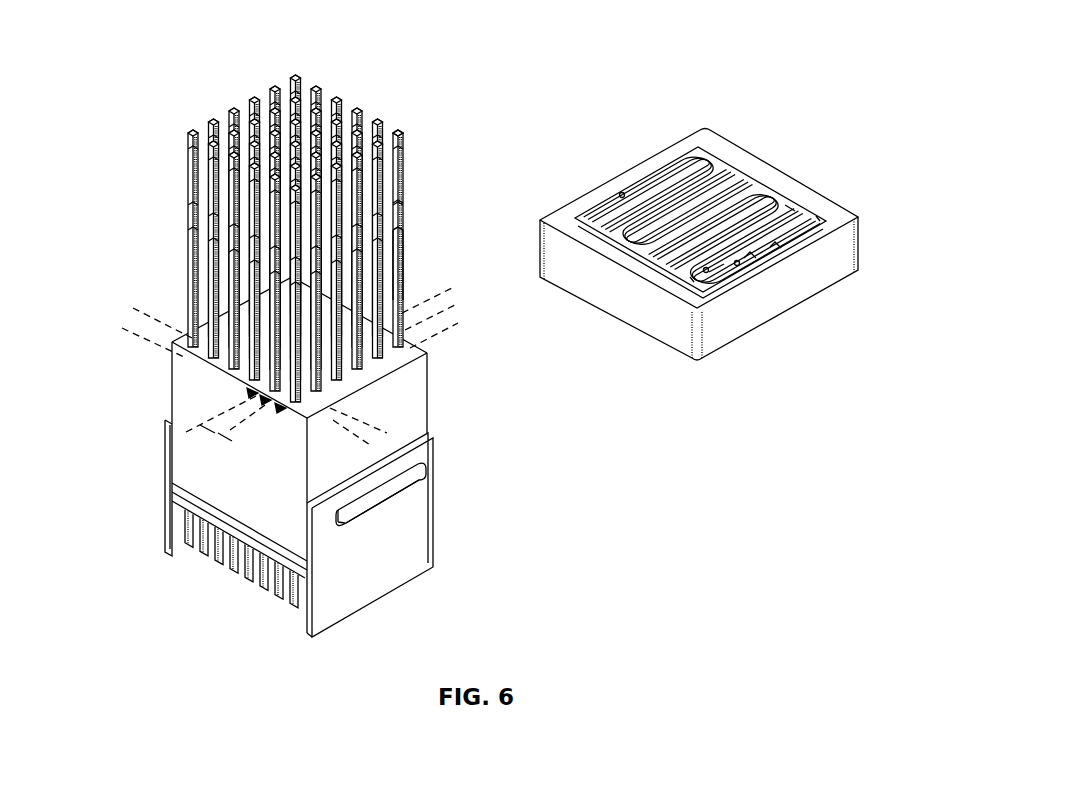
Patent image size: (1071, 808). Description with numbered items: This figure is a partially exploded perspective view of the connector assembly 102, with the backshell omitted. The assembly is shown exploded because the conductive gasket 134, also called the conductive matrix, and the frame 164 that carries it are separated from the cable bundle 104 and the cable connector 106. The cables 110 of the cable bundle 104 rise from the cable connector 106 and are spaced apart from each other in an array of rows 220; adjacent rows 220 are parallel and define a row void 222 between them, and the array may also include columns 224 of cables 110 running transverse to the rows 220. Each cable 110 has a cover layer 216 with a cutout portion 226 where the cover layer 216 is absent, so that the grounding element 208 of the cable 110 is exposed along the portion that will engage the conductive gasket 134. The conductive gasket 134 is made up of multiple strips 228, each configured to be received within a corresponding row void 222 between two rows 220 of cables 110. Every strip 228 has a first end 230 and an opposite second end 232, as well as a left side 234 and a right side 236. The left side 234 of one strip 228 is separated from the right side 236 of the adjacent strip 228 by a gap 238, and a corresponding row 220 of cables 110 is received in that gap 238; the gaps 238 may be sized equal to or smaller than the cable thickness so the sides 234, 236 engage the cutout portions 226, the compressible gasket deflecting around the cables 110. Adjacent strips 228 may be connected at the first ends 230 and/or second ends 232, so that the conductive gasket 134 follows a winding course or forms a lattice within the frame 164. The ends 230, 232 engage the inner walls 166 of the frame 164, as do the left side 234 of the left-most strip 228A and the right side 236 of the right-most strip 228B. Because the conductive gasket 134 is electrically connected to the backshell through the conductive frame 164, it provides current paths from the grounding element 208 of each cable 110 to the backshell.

The connector assembly 102 is at (543, 30).
The cable bundle 104 is at (148, 165).
The cable connector 106 is at (172, 415).
The cables 110 is at (190, 167).
The cover layer 216 is at (405, 188).
The cutout portion 226 is at (405, 203).
The grounding element 208 is at (403, 228).
The columns 224 is at (155, 300).
The row void 222 is at (250, 392).
The rows 220 is at (236, 443).
The frame 164 is at (716, 140).
The inner walls 166 is at (783, 203).
The conductive gasket 134 is at (677, 170).
The strips 228 is at (777, 227).
The left-most strip 228A is at (592, 217).
The right-most strip 228B is at (763, 255).
The first end 230 is at (790, 208).
The second end 232 is at (816, 216).
The left side 234 is at (622, 193).
The right side 236 is at (778, 247).
The gap 238 is at (717, 266).